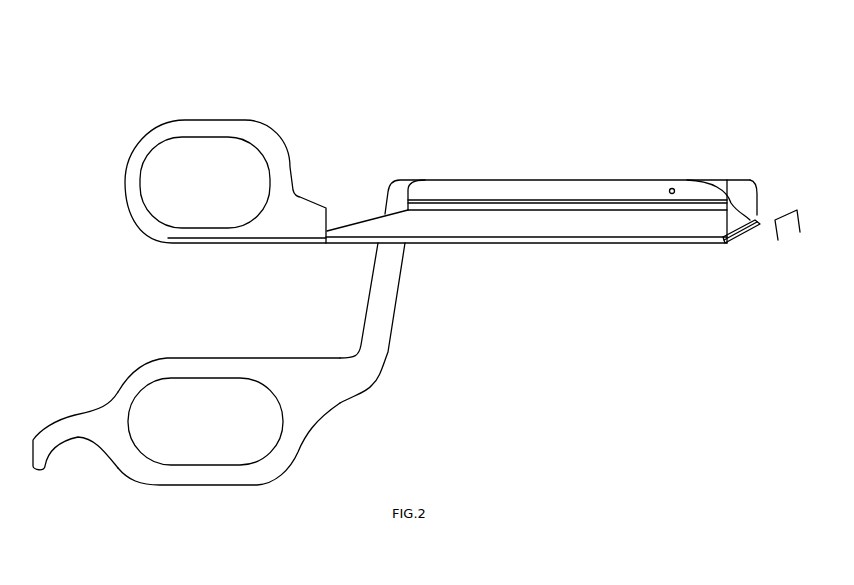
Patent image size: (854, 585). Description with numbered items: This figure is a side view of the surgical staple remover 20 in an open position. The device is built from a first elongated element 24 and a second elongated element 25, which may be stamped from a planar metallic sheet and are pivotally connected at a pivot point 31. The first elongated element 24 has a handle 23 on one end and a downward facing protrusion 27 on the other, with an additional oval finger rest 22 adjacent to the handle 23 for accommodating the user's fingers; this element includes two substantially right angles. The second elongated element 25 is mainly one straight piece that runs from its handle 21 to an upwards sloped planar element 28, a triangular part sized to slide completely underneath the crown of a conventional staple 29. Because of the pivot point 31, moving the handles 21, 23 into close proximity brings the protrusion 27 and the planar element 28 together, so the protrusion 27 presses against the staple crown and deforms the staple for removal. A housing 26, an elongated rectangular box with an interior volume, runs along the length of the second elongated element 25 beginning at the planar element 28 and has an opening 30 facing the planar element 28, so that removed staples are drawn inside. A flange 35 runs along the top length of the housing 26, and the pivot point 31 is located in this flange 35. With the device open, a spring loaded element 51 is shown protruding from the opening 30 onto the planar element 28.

The surgical staple remover 20 is at (443, 92).
The handle 21 is at (268, 145).
The finger rest 22 is at (55, 428).
The handle 23 is at (255, 472).
The first elongated element 24 is at (382, 357).
The second elongated element 25 is at (360, 228).
The housing 26 is at (593, 227).
The downward facing protrusion 27 is at (747, 187).
The upwards sloped planar element 28 is at (758, 226).
The staple 29 is at (803, 207).
The opening 30 is at (725, 233).
The pivot point 31 is at (674, 188).
The flange 35 is at (552, 188).
The spring loaded element 51 is at (750, 230).